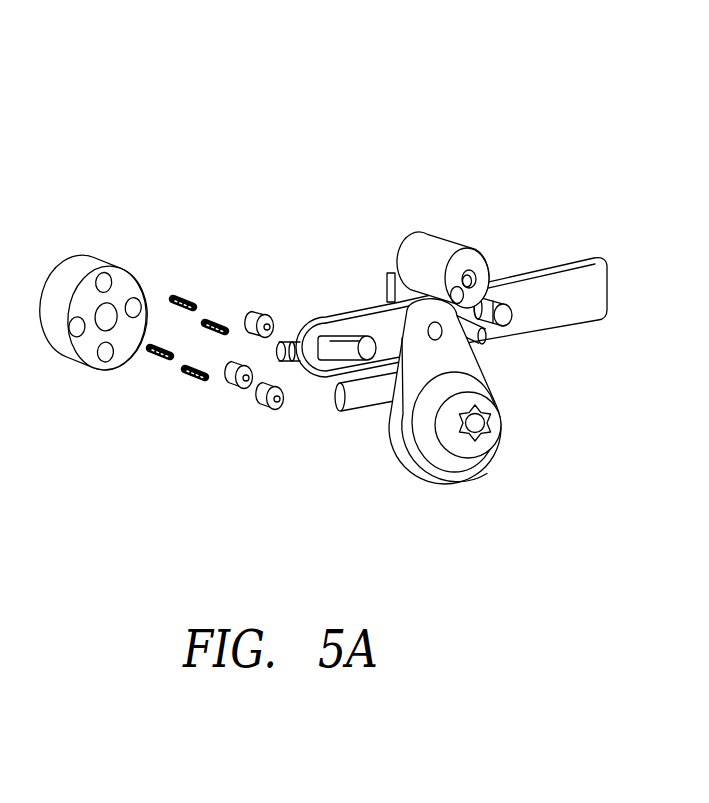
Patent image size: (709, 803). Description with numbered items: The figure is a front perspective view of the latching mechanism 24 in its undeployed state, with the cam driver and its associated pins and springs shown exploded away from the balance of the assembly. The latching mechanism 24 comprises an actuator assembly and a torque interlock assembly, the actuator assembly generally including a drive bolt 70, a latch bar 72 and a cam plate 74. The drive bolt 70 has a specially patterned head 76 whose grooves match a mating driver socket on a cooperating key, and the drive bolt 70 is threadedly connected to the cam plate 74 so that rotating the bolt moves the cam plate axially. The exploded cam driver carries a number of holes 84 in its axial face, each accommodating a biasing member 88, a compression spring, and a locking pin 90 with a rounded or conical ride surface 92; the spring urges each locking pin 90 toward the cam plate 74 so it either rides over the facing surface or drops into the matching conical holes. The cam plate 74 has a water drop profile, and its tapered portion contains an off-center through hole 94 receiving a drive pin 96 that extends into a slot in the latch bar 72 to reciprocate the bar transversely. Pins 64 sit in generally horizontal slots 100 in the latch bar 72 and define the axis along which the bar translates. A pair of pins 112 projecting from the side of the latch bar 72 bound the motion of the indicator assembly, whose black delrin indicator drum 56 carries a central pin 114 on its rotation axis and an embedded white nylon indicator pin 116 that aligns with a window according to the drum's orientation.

The latching mechanism 24 is at (431, 141).
The indicator drum 56 is at (460, 227).
The pins 64 is at (510, 316).
The drive bolt 70 is at (352, 398).
The latch bar 72 is at (595, 247).
The cam plate 74 is at (89, 243).
The specially patterned head 76 is at (497, 466).
The holes 84 is at (131, 297).
The biasing member 88 is at (212, 330).
The locking pin 90 is at (233, 362).
The ride surface 92 is at (287, 332).
The through hole 94 is at (442, 338).
The drive pin 96 is at (435, 398).
The horizontal slots 100 is at (345, 338).
The pins 112 is at (388, 259).
The central pin 114 is at (474, 273).
The indicator pin 116 is at (452, 289).